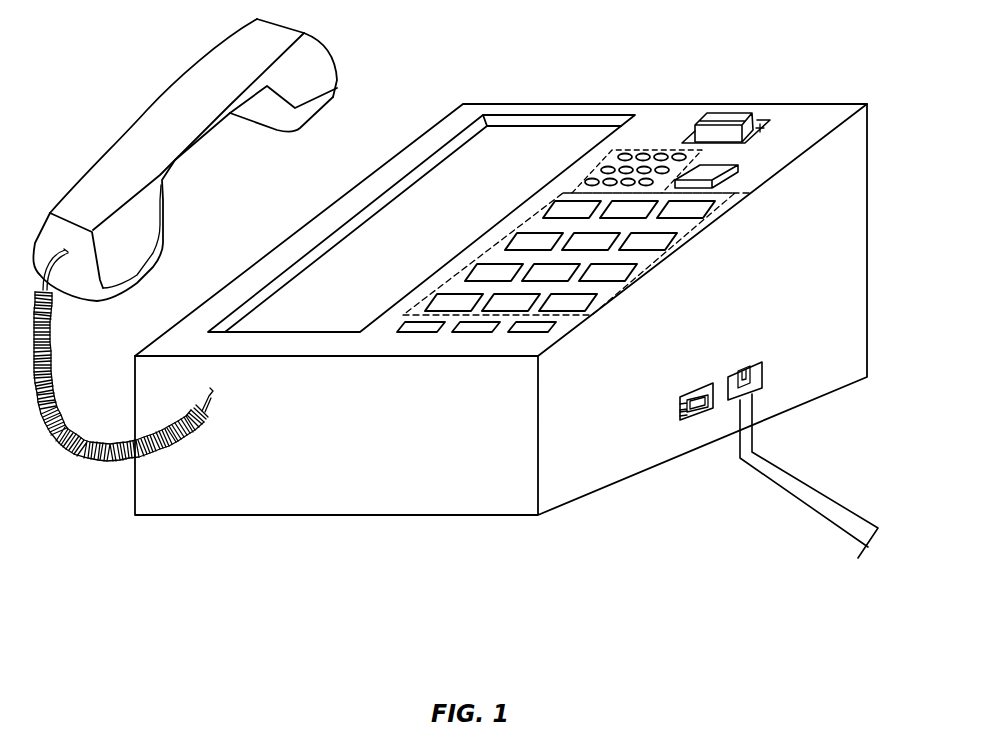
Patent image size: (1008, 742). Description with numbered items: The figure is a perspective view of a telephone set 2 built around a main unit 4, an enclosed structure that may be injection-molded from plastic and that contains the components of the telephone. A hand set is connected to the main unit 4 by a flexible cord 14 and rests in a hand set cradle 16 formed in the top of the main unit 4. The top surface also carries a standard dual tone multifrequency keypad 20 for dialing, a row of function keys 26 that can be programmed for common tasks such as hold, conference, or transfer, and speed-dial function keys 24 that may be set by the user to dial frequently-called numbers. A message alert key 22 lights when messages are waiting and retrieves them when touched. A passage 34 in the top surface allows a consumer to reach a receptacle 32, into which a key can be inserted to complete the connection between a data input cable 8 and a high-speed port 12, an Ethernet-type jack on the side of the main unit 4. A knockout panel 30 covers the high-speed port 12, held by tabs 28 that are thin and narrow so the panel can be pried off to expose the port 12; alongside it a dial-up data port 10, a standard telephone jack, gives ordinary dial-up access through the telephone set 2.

The telephone set 2 is at (551, 103).
The main unit 4 is at (855, 273).
The data input cable 8 is at (805, 513).
The dial-up data port 10 is at (760, 362).
The high-speed port 12 is at (687, 420).
The cord 14 is at (53, 343).
The hand set cradle 16 is at (197, 78).
The keypad 20 is at (737, 195).
The message alert key 22 is at (738, 166).
The function keys 24 is at (650, 148).
The function keys 26 is at (415, 333).
The tabs 28 is at (683, 398).
The knockout panel 30 is at (702, 393).
The receptacle 32 is at (760, 128).
The passage 34 is at (760, 126).